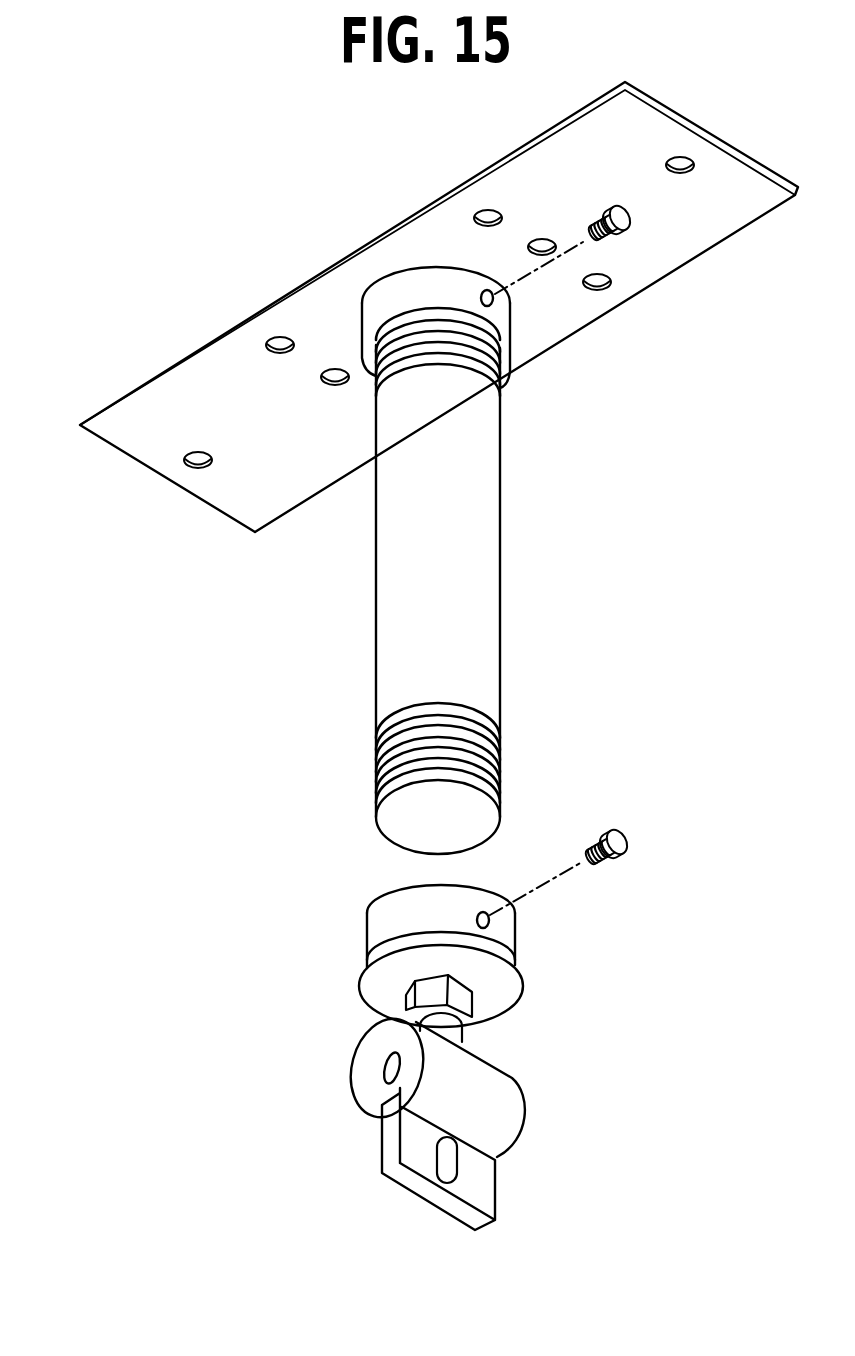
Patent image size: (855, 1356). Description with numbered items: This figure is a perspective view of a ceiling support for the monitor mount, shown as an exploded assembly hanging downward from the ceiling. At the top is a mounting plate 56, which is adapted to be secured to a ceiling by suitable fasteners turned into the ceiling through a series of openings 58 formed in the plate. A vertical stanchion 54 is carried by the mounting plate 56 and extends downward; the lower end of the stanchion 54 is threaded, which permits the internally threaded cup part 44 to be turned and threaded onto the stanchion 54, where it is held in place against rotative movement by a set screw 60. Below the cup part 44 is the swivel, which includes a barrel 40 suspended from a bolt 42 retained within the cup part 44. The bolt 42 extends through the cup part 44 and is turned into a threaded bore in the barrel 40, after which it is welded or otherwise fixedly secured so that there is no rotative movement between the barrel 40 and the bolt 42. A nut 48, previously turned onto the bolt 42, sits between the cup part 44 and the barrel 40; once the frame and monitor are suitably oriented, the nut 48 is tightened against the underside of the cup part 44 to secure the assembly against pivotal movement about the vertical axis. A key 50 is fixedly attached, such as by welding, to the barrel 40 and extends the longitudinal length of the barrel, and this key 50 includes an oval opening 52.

The barrel 40 is at (503, 1102).
The bolt 42 is at (443, 1028).
The cup part 44 is at (367, 948).
The nut 48 is at (462, 995).
The key 50 is at (495, 1173).
The oval opening 52 is at (452, 1168).
The vertical stanchion 54 is at (375, 683).
The mounting plate 56 is at (130, 386).
The openings 58 is at (280, 337).
The set screw 60 is at (620, 856).